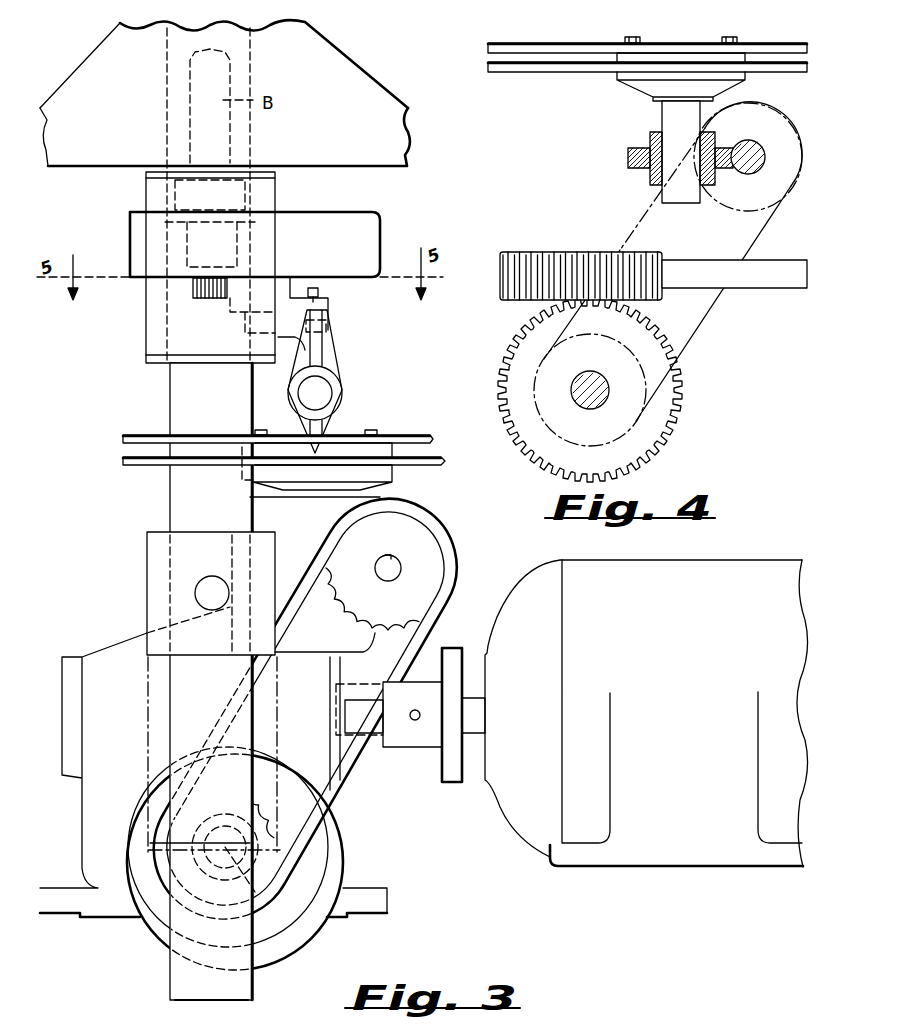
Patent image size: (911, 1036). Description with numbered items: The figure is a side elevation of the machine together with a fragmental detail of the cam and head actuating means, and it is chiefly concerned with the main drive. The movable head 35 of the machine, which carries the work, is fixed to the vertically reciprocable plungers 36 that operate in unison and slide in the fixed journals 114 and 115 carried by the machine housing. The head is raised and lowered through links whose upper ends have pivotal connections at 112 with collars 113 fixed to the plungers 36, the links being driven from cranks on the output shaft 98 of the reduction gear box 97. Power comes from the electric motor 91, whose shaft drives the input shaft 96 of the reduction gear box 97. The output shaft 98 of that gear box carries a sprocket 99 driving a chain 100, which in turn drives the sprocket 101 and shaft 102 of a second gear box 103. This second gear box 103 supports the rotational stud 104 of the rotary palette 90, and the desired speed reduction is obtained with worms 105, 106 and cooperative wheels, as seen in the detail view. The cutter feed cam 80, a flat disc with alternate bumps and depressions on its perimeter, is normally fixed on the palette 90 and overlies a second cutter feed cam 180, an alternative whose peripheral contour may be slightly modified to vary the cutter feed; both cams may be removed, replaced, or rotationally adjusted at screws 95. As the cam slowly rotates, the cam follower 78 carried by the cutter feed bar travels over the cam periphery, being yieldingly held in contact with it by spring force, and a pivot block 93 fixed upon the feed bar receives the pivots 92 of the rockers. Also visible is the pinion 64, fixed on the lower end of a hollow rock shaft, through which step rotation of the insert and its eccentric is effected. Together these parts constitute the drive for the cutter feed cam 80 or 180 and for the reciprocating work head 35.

In FIG. 3, the movable head 35 is at (395, 130).
In FIG. 3, the plungers 36 is at (170, 388).
In FIG. 3, the pinion 64 is at (193, 289).
In FIG. 3, the cam follower 78 is at (335, 427).
In FIG. 3, the cutter feed cam 80 is at (407, 435).
In FIG. 4, the cutter feed cam 80 is at (488, 50).
In FIG. 3, the rotary palette 90 is at (382, 488).
In FIG. 4, the rotary palette 90 is at (655, 86).
In FIG. 3, the electric motor 91 is at (540, 580).
In FIG. 3, the pivots 92 is at (322, 292).
In FIG. 3, the pivot block 93 is at (332, 312).
In FIG. 4, the screws 95 is at (728, 38).
In FIG. 3, the input shaft 96 is at (372, 733).
In FIG. 4, the input shaft 96 is at (750, 278).
In FIG. 3, the reduction gear box 97 is at (328, 820).
In FIG. 3, the output shaft 98 is at (255, 892).
In FIG. 3, the sprocket 99 is at (323, 832).
In FIG. 4, the sprocket 99 is at (630, 430).
In FIG. 3, the chain 100 is at (312, 803).
In FIG. 4, the chain 100 is at (693, 338).
In FIG. 3, the sprocket 101 is at (413, 602).
In FIG. 4, the sprocket 101 is at (762, 219).
In FIG. 3, the shaft 102 is at (402, 568).
In FIG. 4, the shaft 102 is at (760, 143).
In FIG. 3, the second gear box 103 is at (367, 498).
In FIG. 4, the rotational stud 104 is at (668, 115).
In FIG. 4, the worm 105 is at (552, 253).
In FIG. 4, the worm 106 is at (776, 200).
In FIG. 3, the pivotal connections 112 is at (196, 597).
In FIG. 3, the collars 113 is at (153, 622).
In FIG. 3, the fixed journal 114 is at (148, 697).
In FIG. 3, the fixed journal 115 is at (146, 325).
In FIG. 3, the second cutter feed cam 180 is at (432, 467).
In FIG. 4, the second cutter feed cam 180 is at (488, 68).